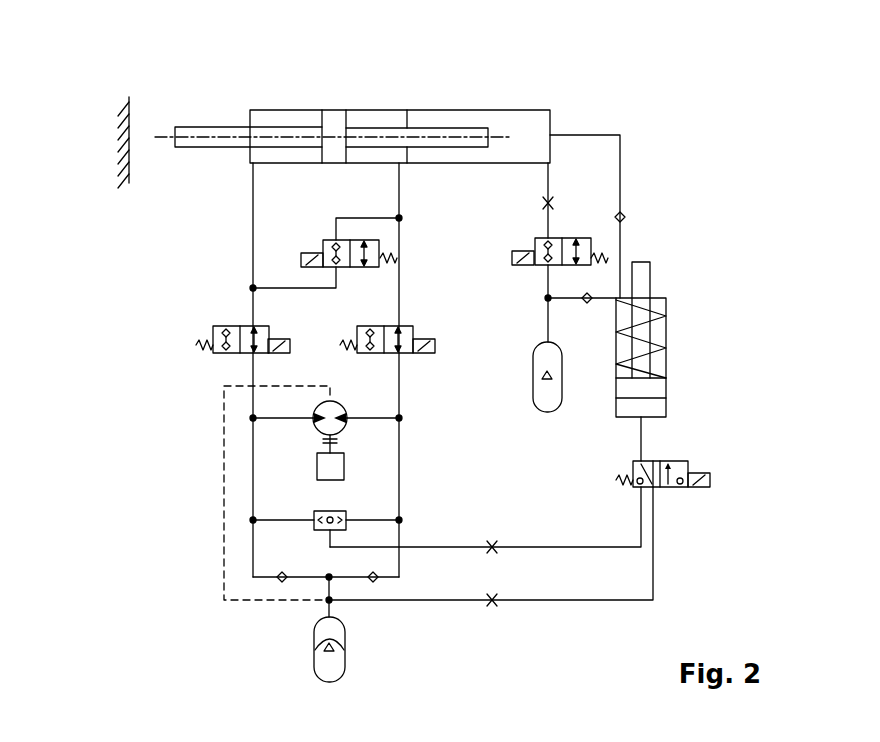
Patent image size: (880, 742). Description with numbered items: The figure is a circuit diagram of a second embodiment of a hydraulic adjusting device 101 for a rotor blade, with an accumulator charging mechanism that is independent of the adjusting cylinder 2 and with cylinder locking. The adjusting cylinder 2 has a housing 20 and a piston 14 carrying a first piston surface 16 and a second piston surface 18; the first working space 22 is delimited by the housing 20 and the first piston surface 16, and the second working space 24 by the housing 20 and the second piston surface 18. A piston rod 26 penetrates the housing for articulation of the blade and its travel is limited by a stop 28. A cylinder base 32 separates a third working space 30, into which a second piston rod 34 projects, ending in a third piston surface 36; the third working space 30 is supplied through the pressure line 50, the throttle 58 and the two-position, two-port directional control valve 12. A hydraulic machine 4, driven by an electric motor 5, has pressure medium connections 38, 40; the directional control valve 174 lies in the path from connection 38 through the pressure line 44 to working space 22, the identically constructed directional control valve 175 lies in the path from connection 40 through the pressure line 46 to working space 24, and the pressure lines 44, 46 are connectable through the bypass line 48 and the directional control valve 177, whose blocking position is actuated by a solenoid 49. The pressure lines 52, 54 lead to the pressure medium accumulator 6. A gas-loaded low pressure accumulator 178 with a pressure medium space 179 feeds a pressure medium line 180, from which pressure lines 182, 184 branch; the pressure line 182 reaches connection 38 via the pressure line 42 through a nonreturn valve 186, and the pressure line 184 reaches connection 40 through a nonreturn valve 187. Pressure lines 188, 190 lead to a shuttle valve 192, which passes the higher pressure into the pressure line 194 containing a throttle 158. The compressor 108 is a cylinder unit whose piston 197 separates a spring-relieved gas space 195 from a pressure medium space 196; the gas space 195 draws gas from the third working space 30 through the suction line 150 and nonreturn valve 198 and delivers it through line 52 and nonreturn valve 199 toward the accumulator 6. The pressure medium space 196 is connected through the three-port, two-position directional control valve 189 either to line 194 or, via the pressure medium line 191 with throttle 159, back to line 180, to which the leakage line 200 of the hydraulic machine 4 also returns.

The adjusting cylinder 2 is at (352, 122).
The hydraulic machine 4 is at (329, 442).
The electric motor 5 is at (346, 466).
The pressure medium accumulator 6 is at (533, 405).
The 2/2-port directional control valve 12 is at (568, 232).
The piston 14 is at (335, 118).
The first piston surface 16 is at (320, 160).
The second piston surface 18 is at (347, 158).
The housing 20 is at (448, 110).
The first working space 22 is at (288, 122).
The second working space 24 is at (382, 120).
The piston rod 26 is at (215, 128).
The stop 28 is at (129, 98).
The third working space 30 is at (520, 130).
The cylinder base 32 is at (405, 120).
The second piston rod 34 is at (462, 132).
The third piston surface 36 is at (503, 158).
The first pressure medium connection 38 is at (315, 413).
The second pressure medium connection 40 is at (347, 413).
The pressure line 42 is at (290, 421).
The pressure line 44 is at (253, 198).
The pressure line 46 is at (400, 183).
The bypass line 48 is at (292, 288).
The solenoid 49 is at (302, 257).
The pressure line 50 is at (550, 180).
The pressure line 52 is at (566, 300).
The pressure line 54 is at (545, 325).
The throttle 58 is at (543, 205).
The adjusting device 101 is at (183, 95).
The compressor 108 is at (675, 332).
The suction line 150 is at (587, 133).
The throttle 158 is at (492, 538).
The throttle 159 is at (493, 607).
The 2/2-port directional control valve 174 is at (237, 318).
The directional control valve 175 is at (414, 320).
The directional control valve 177 is at (322, 233).
The low pressure accumulator 178 is at (366, 649).
The pressure medium space 179 is at (337, 633).
The pressure medium line 180 is at (327, 611).
The pressure line 182 is at (252, 515).
The pressure line 184 is at (400, 458).
The nonreturn valve 186 is at (282, 571).
The nonreturn valve 187 is at (379, 577).
The pressure line 188 is at (281, 518).
The 3/2-port directional control valve 189 is at (676, 498).
The pressure line 190 is at (401, 517).
The pressure medium line 191 is at (562, 607).
The shuttle valve 192 is at (326, 510).
The pressure line 194 is at (552, 543).
The gas space 195 is at (662, 322).
The pressure medium space 196 is at (665, 412).
The piston 197 is at (662, 384).
The nonreturn valve 198 is at (625, 217).
The nonreturn valve 199 is at (590, 303).
The leakage line 200 is at (224, 450).